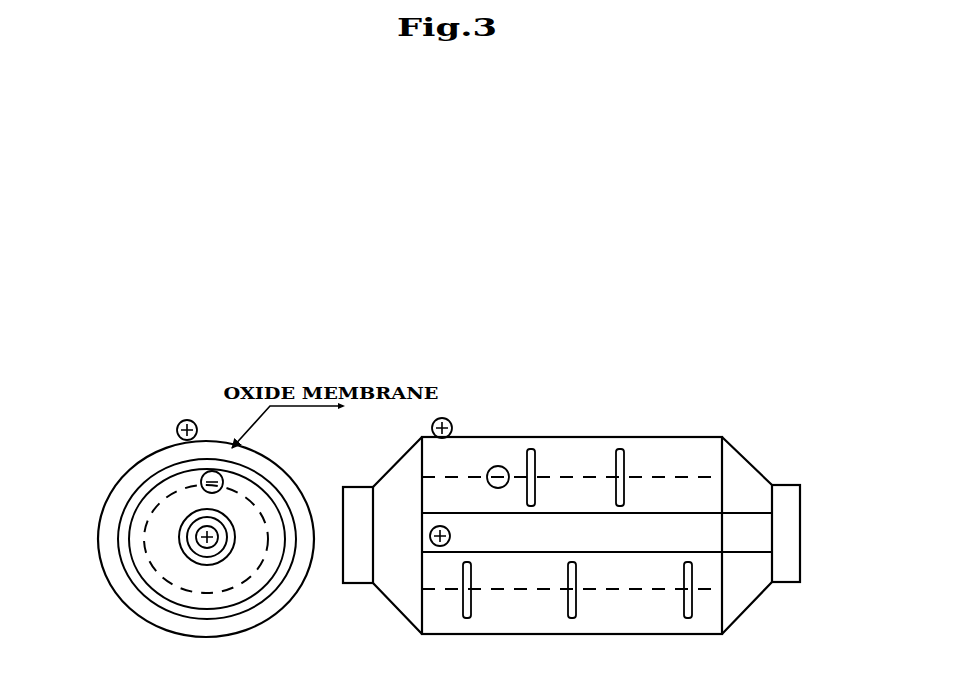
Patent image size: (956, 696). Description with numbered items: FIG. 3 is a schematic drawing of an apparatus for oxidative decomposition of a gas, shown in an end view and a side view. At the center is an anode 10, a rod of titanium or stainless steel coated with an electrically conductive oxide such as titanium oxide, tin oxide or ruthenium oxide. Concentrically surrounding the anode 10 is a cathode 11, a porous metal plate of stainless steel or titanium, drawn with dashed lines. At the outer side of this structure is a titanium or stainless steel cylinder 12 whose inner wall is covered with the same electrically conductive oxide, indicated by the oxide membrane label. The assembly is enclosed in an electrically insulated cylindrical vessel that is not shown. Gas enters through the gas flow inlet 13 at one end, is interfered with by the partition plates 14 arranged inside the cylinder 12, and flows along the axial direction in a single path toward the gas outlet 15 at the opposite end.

The anode 10 is at (179, 528).
The cathode 11 is at (240, 594).
The cylinder 12 is at (119, 597).
The gas flow inlet 13 is at (358, 512).
The partition plate 14 is at (584, 577).
The gas outlet 15 is at (790, 502).